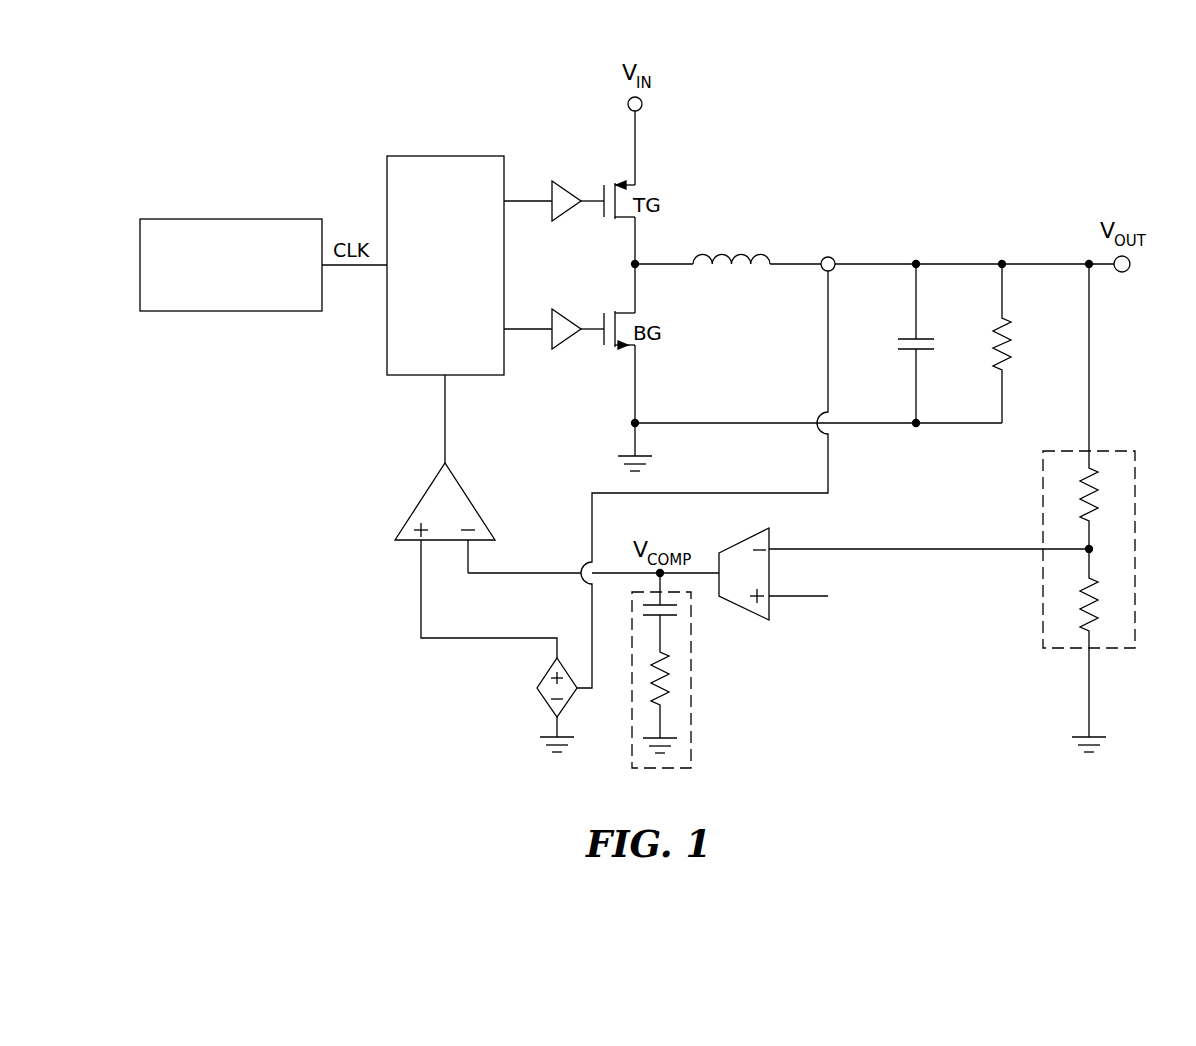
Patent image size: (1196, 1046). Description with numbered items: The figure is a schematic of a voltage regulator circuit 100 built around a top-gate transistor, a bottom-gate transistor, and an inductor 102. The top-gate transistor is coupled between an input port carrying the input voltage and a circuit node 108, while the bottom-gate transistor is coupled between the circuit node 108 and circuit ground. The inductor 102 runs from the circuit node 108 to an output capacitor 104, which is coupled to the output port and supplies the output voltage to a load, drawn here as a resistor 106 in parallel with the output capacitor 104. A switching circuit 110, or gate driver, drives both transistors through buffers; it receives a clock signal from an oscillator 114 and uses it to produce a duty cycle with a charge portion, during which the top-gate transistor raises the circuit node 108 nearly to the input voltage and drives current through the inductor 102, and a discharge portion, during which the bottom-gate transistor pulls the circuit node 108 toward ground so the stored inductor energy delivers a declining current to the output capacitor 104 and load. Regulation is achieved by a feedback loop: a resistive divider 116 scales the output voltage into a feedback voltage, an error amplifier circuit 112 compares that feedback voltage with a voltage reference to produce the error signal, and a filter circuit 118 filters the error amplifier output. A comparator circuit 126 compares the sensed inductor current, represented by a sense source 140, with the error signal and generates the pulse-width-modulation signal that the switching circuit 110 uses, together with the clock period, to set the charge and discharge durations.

The voltage regulator circuit 100 is at (1084, 104).
The inductor 102 is at (736, 262).
The output capacitor 104 is at (921, 340).
The load resistor 106 is at (1010, 334).
The circuit node 108 is at (632, 264).
The switching circuit 110 is at (446, 155).
The error amplifier circuit 112 is at (742, 541).
The oscillator 114 is at (230, 218).
The resistive divider 116 is at (1138, 508).
The filter circuit 118 is at (692, 682).
The comparator circuit 126 is at (474, 504).
The current sense voltage source 140 is at (541, 703).